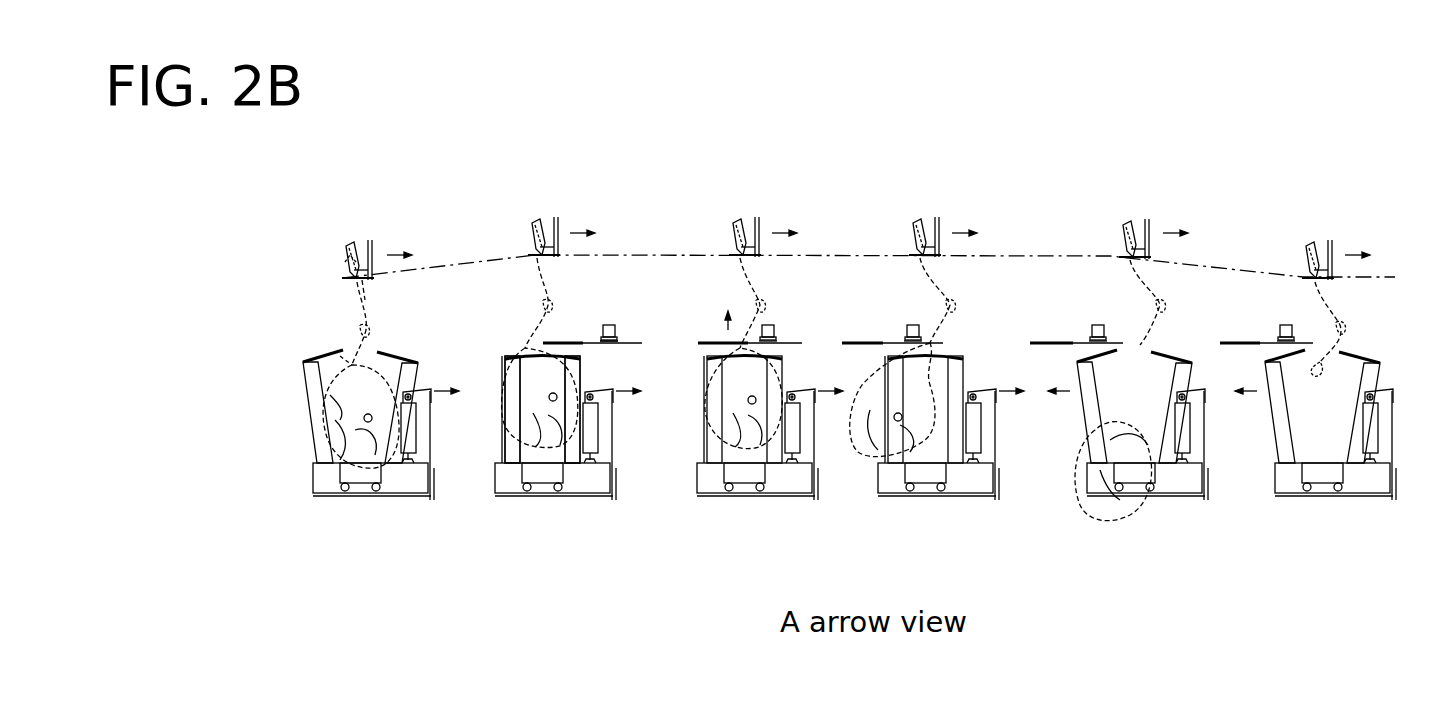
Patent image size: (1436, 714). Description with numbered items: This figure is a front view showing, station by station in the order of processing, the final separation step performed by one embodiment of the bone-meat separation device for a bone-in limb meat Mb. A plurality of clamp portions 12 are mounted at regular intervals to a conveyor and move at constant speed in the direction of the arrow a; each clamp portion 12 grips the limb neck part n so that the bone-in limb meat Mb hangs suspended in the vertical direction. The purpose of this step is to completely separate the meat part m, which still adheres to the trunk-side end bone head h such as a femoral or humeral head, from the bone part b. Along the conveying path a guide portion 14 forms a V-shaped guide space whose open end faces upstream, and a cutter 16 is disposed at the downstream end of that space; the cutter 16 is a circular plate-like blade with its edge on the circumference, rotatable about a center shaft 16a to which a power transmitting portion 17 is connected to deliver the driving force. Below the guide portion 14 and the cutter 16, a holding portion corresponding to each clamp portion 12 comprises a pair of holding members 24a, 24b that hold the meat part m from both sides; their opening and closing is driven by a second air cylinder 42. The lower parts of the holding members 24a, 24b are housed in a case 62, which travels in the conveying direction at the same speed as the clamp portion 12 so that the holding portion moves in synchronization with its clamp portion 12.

The clamp portion 12 is at (359, 250).
The arrow a is at (396, 253).
The limb neck part n is at (345, 259).
The bone-in limb meat Mb is at (345, 316).
The bone part b is at (367, 300).
The trunk-side end bone head h is at (340, 356).
The meat part m is at (318, 445).
The holding member 24a is at (408, 373).
The holding member 24b is at (315, 390).
The case 62 is at (325, 483).
The second air cylinder 42 is at (413, 437).
The guide portion 14 is at (582, 326).
The cutter 16 is at (627, 342).
The center shaft 16a is at (613, 343).
The power transmitting portion 17 is at (608, 325).